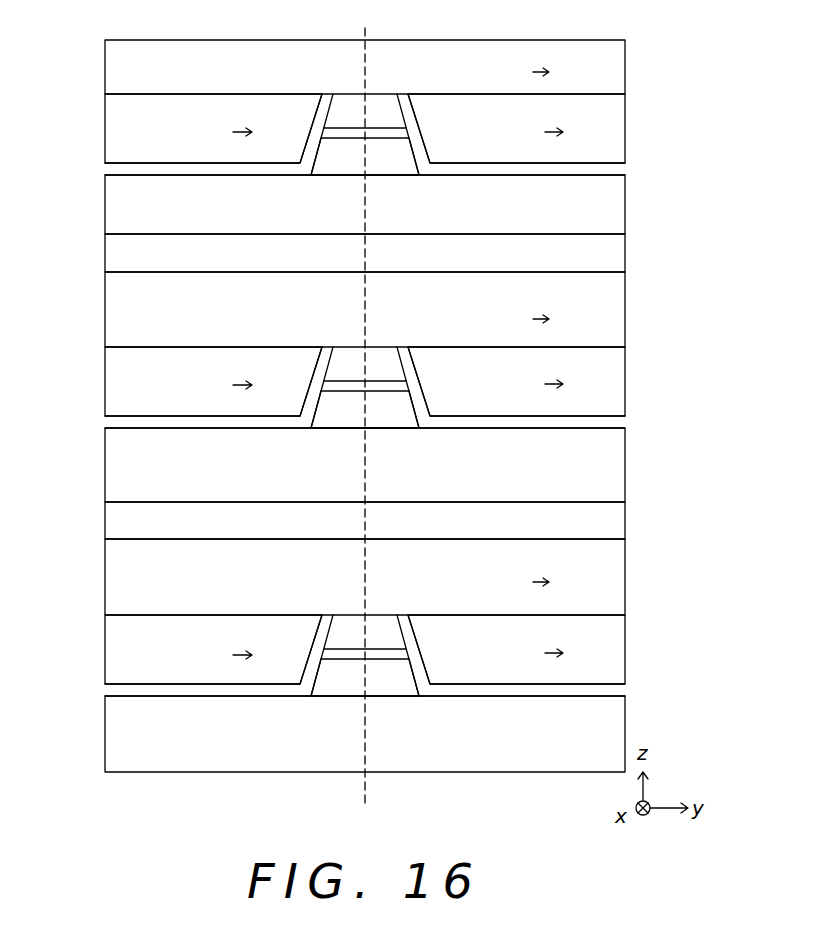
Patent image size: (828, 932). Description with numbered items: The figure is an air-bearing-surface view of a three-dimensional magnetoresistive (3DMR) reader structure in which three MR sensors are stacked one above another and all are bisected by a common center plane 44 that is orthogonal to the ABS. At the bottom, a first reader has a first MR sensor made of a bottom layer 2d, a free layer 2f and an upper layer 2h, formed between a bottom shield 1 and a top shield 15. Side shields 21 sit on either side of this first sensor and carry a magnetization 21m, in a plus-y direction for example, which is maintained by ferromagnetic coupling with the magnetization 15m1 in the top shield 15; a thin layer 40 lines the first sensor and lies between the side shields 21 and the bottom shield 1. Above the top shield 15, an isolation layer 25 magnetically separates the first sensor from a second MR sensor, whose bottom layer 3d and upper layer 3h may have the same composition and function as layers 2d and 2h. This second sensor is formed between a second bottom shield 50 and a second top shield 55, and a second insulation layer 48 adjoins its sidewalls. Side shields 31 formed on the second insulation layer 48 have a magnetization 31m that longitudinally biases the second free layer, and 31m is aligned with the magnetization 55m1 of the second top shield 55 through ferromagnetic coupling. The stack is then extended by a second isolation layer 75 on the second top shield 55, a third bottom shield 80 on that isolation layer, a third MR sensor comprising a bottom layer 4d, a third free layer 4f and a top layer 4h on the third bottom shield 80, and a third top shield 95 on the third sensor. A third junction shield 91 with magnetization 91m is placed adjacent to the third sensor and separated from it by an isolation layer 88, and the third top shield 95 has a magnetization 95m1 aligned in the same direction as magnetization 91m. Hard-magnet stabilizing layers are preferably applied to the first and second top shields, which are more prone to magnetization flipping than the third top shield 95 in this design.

The bottom shield 1 is at (615, 725).
The first liner/barrier layer 40 is at (615, 694).
The side shields 21 is at (615, 656).
The magnetization of side shields 21m is at (227, 655).
The top shield 15 is at (615, 581).
The magnetization of top shield 15m1 is at (528, 583).
The isolation layer 25 is at (615, 528).
The second bottom shield 50 is at (615, 469).
The second insulation layer 48 is at (615, 426).
The side shields 31 is at (615, 381).
The magnetization of side shields 31m is at (228, 386).
The second top shield 55 is at (615, 323).
The magnetization of second top shield 55m1 is at (528, 320).
The second isolation layer 75 is at (615, 258).
The third bottom shield 80 is at (615, 214).
The isolation layer 88 is at (615, 174).
The third junction shield 91 is at (615, 129).
The magnetization of third junction shield 91m is at (228, 133).
The third top shield 95 is at (615, 69).
The magnetization of third top shield 95m1 is at (528, 73).
The bottom layer of first MR sensor 2d is at (330, 687).
The free layer of first MR sensor 2f is at (352, 653).
The upper layer of first MR sensor 2h is at (390, 638).
The bottom layer of second MR sensor 3d is at (337, 413).
The upper layer of second MR sensor 3h is at (342, 362).
The bottom layer of third MR sensor 4d is at (380, 152).
The third free layer 4f is at (350, 132).
The top layer of third MR sensor 4h is at (330, 105).
The center plane 44 is at (363, 418).